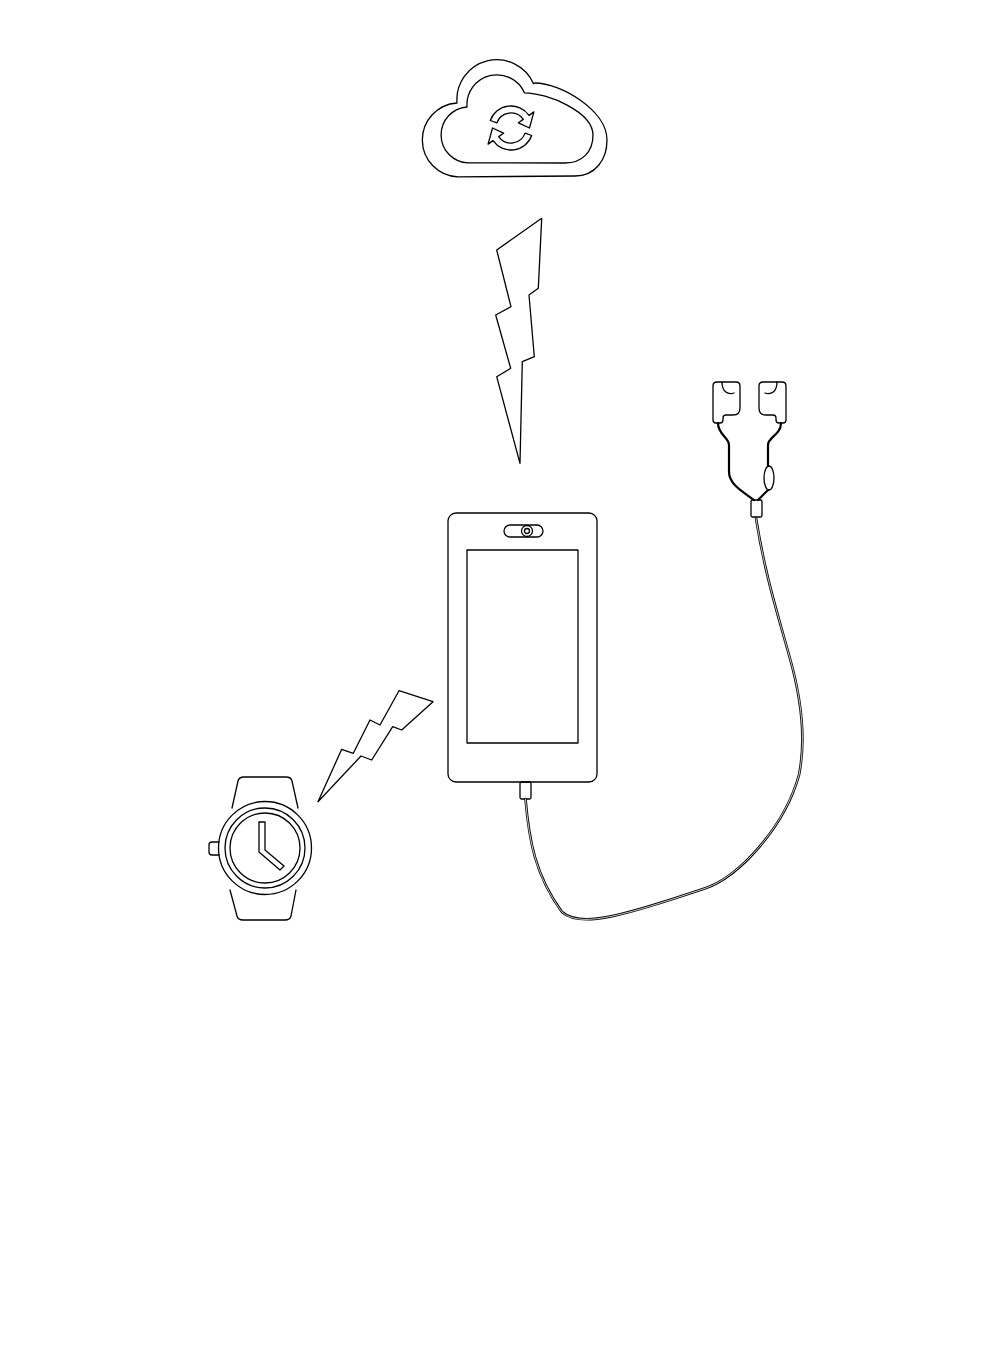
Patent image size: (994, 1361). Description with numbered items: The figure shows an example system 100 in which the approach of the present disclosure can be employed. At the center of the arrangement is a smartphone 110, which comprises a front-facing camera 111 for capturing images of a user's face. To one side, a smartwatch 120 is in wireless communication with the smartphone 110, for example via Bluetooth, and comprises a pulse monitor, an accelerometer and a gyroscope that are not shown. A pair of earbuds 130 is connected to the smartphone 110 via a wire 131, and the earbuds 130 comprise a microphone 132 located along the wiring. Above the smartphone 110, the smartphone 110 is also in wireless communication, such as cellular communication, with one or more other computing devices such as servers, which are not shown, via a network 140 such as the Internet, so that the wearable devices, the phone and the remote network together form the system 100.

The system 100 is at (172, 97).
The smartphone 110 is at (465, 512).
The front-facing camera 111 is at (530, 527).
The smartwatch 120 is at (263, 776).
The pair of earbuds 130 is at (783, 380).
The wire 131 is at (780, 838).
The microphone 132 is at (773, 478).
The network 140 is at (588, 112).